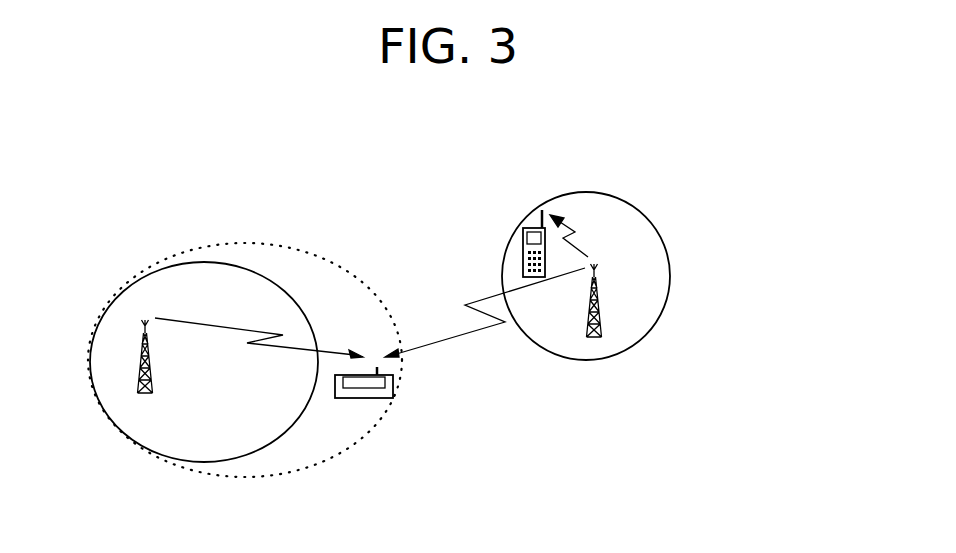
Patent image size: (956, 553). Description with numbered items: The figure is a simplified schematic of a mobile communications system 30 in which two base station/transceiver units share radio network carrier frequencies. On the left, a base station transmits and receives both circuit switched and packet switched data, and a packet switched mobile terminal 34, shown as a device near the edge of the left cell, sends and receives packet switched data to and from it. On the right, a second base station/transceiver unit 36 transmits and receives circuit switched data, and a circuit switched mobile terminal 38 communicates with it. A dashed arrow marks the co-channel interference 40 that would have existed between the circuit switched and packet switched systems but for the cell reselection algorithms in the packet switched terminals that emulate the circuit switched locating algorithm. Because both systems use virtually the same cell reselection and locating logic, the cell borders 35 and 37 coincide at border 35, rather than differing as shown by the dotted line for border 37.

The mobile communications system 30 is at (766, 196).
The mobile terminal 34 is at (393, 387).
The cell border 35 is at (262, 450).
The second base station/transceiver unit 36 is at (603, 327).
The cell border 37 is at (370, 428).
The mobile terminal 38 is at (527, 230).
The co-channel interference 40 is at (466, 295).